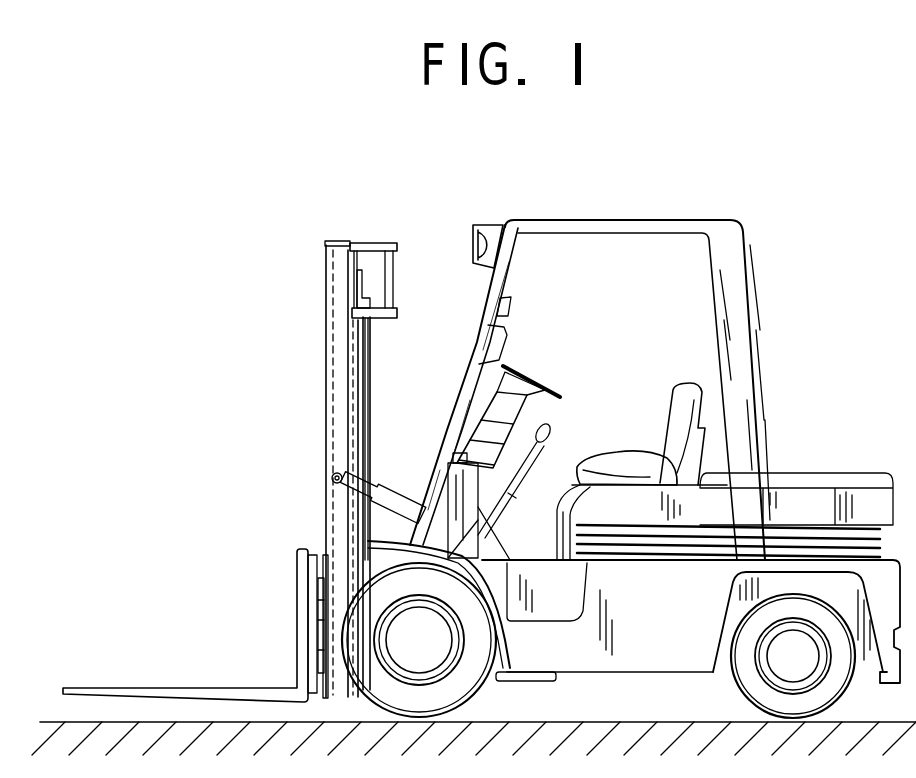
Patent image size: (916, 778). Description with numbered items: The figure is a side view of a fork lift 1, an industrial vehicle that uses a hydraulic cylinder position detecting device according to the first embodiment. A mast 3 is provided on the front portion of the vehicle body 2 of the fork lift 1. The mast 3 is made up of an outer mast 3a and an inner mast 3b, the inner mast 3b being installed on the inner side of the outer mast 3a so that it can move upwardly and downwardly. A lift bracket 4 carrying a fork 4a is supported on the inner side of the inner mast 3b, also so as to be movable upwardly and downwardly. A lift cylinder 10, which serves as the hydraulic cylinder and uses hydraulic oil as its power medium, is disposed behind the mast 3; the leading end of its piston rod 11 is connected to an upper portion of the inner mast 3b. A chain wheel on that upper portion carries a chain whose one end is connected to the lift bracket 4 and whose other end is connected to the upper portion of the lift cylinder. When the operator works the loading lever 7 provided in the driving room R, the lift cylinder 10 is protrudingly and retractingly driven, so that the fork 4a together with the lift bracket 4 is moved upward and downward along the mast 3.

The fork lift 1 is at (787, 254).
The driving room R is at (634, 272).
The vehicle body 2 is at (610, 645).
The mast 3 is at (215, 243).
The outer mast 3a is at (327, 297).
The inner mast 3b is at (327, 270).
The lift bracket 4 is at (330, 556).
The fork 4a is at (182, 692).
The loading lever 7 is at (485, 390).
The lift cylinder 10 is at (368, 343).
The piston rod 11 is at (362, 278).